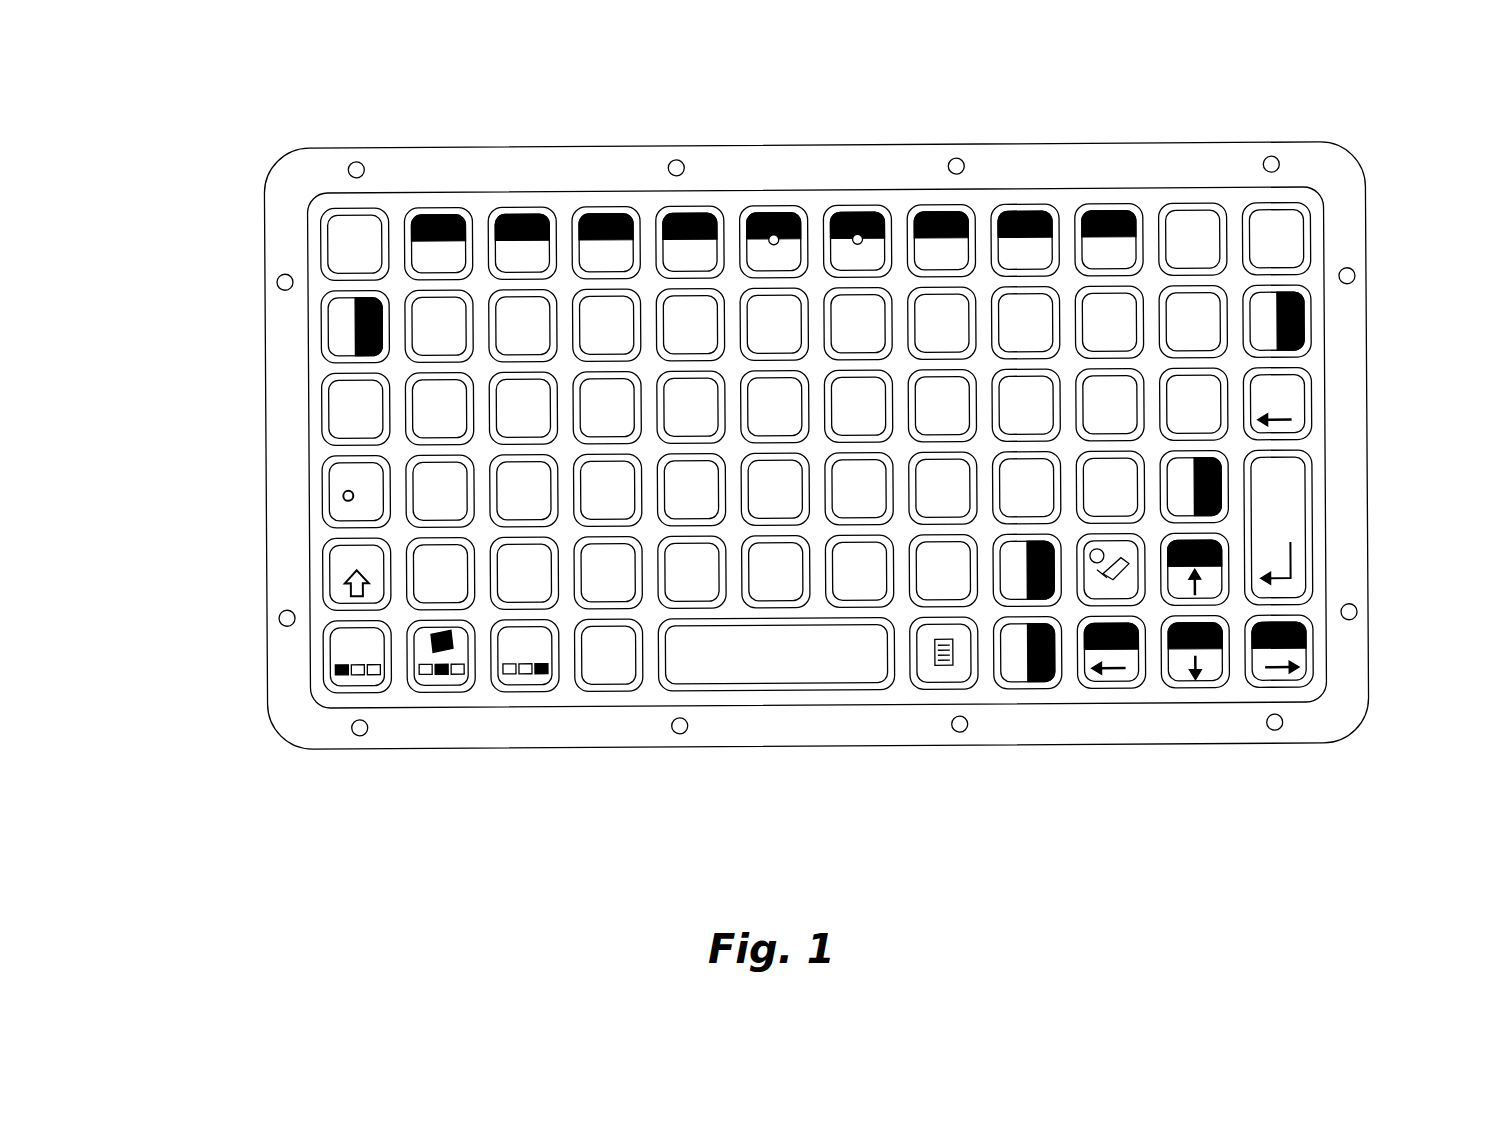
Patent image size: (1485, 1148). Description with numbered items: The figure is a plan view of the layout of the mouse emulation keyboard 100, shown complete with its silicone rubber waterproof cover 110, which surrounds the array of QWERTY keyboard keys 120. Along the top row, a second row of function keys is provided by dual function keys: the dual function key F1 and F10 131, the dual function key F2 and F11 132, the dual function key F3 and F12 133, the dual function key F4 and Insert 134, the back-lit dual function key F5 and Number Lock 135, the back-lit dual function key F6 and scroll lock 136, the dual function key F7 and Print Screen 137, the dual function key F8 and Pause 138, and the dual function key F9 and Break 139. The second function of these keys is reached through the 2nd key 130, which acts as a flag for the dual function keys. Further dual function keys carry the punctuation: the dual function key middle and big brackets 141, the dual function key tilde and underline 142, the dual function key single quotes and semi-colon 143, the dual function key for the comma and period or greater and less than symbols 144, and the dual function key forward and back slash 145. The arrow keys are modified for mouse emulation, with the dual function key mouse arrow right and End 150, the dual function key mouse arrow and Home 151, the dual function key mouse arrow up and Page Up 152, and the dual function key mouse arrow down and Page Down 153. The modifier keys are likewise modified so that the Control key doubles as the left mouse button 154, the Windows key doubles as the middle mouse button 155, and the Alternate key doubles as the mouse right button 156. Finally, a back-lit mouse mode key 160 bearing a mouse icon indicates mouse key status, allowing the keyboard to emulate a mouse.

The mouse emulation keyboard 100 is at (827, 527).
The silicone rubber waterproof cover 110 is at (1243, 158).
The QWERTY keyboard keys 120 is at (850, 583).
The 2nd key 130 is at (597, 673).
The dual function key F1 and F10 131 is at (467, 215).
The dual function key F2 and F11 132 is at (538, 215).
The dual function key F3 and F12 133 is at (627, 215).
The dual function key F4 and Insert 134 is at (718, 217).
The dual function key F5 and Number Lock 135 is at (790, 215).
The dual function key F6 and scroll lock 136 is at (877, 218).
The dual function key F7 and Print Screen 137 is at (955, 215).
The dual function key F8 and Pause 138 is at (1030, 217).
The dual function key F9 and Break 139 is at (1112, 215).
The dual function key middle and big brackets 141 is at (330, 337).
The dual function key tilde and underline 142 is at (1305, 310).
The dual function key single quotes and semi-colon 143 is at (1217, 462).
The dual function key period or greater and less than symbols 144 is at (1003, 590).
The dual function key forward and back slash 145 is at (1013, 660).
The dual function key mouse arrow right and End 150 is at (1288, 670).
The dual function key mouse arrow left and Home 151 is at (1103, 663).
The dual function key mouse arrow up and Page Up 152 is at (1200, 570).
The dual function key mouse arrow down and Page Down 153 is at (1180, 653).
The dual function key left mouse button and Control 154 is at (357, 680).
The dual function key middle mouse button and Windows 155 is at (442, 680).
The dual function key mouse right button and Alternate 156 is at (518, 680).
The mouse key status with mouse icon 160 is at (1133, 537).